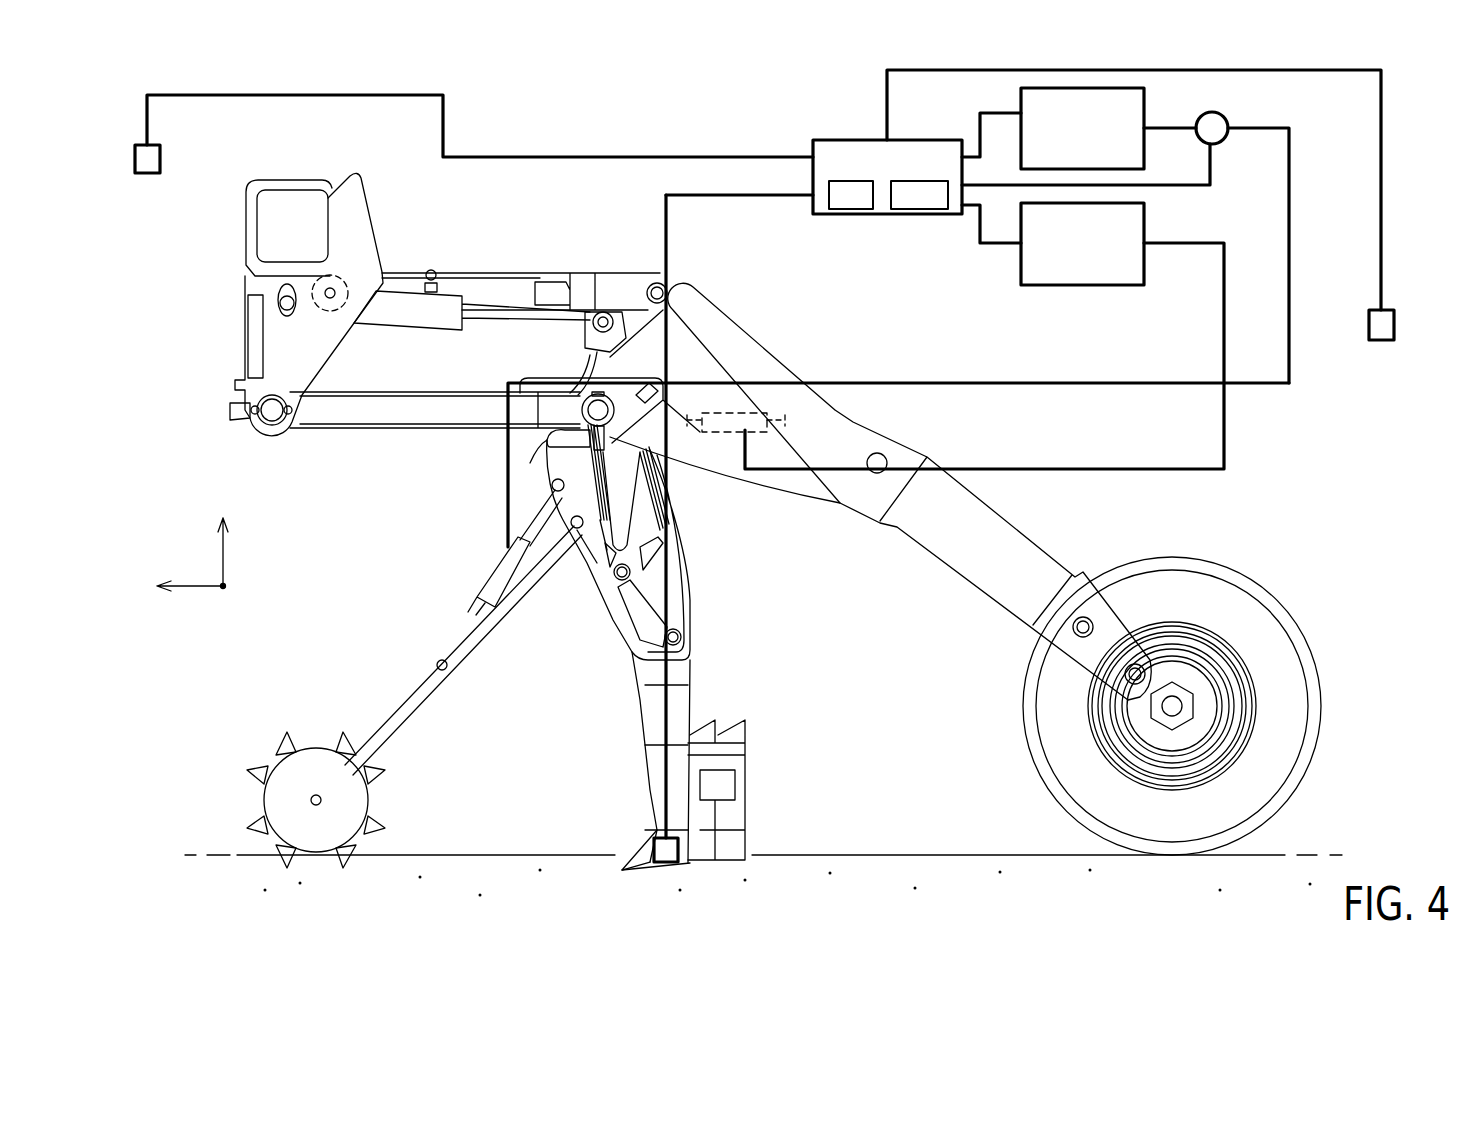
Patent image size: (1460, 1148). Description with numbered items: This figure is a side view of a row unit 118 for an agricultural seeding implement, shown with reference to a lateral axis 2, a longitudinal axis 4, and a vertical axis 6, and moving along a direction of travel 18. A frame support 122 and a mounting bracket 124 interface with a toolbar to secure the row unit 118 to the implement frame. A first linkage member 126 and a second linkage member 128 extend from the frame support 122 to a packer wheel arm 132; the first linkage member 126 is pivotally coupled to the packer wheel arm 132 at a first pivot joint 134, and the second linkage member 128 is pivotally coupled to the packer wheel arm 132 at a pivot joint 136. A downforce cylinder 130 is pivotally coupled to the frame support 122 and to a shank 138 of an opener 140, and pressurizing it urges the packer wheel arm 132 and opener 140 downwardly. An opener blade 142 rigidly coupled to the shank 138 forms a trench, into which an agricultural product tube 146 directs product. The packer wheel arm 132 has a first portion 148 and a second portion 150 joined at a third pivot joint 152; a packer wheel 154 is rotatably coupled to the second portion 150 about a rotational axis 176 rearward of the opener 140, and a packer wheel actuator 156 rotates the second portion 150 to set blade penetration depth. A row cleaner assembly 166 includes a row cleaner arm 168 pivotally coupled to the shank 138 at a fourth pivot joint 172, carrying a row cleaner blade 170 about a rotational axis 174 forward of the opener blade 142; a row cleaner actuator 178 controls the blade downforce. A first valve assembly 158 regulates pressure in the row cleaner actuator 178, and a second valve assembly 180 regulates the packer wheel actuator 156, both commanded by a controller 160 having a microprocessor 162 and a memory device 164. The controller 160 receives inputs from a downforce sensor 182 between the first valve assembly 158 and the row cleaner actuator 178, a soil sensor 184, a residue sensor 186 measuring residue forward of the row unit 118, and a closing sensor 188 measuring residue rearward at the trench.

The lateral axis or direction 2 is at (227, 557).
The longitudinal axis or direction 4 is at (197, 588).
The vertical axis or direction 6 is at (227, 590).
The direction of travel 18 is at (342, 585).
The row unit 118 is at (723, 262).
The frame support 122 is at (360, 216).
The mounting bracket 124 is at (307, 178).
The first linkage member 126 is at (393, 432).
The second linkage member 128 is at (498, 272).
The downforce cylinder 130 is at (440, 320).
The packer wheel arm 132 is at (797, 323).
The first pivot joint 134 is at (588, 428).
The pivot joint 136 is at (654, 284).
The shank 138 is at (668, 543).
The opener 140 is at (560, 565).
The opener blade 142 is at (637, 843).
The agricultural product tube 146 is at (703, 737).
The first portion 148 is at (728, 468).
The second portion 150 is at (832, 411).
The third pivot joint 152 is at (878, 453).
The packer wheel 154 is at (1258, 594).
The packer wheel actuator 156 is at (723, 413).
The first valve assembly 158 is at (1020, 108).
The controller 160 is at (815, 146).
The microprocessor 162 is at (853, 210).
The memory device 164 is at (917, 210).
The row cleaner assembly 166 is at (425, 805).
The row cleaner arm 168 is at (387, 737).
The row cleaner blade 170 is at (315, 745).
The fourth pivot joint 172 is at (578, 530).
The rotational axis 174 is at (310, 802).
The rotational axis 176 is at (1172, 707).
The row cleaner actuator 178 is at (497, 568).
The second valve assembly 180 is at (1085, 286).
The downforce sensor 182 is at (1227, 118).
The soil sensor 184 is at (654, 860).
The residue sensor 186 is at (135, 157).
The closing sensor 188 is at (1395, 324).